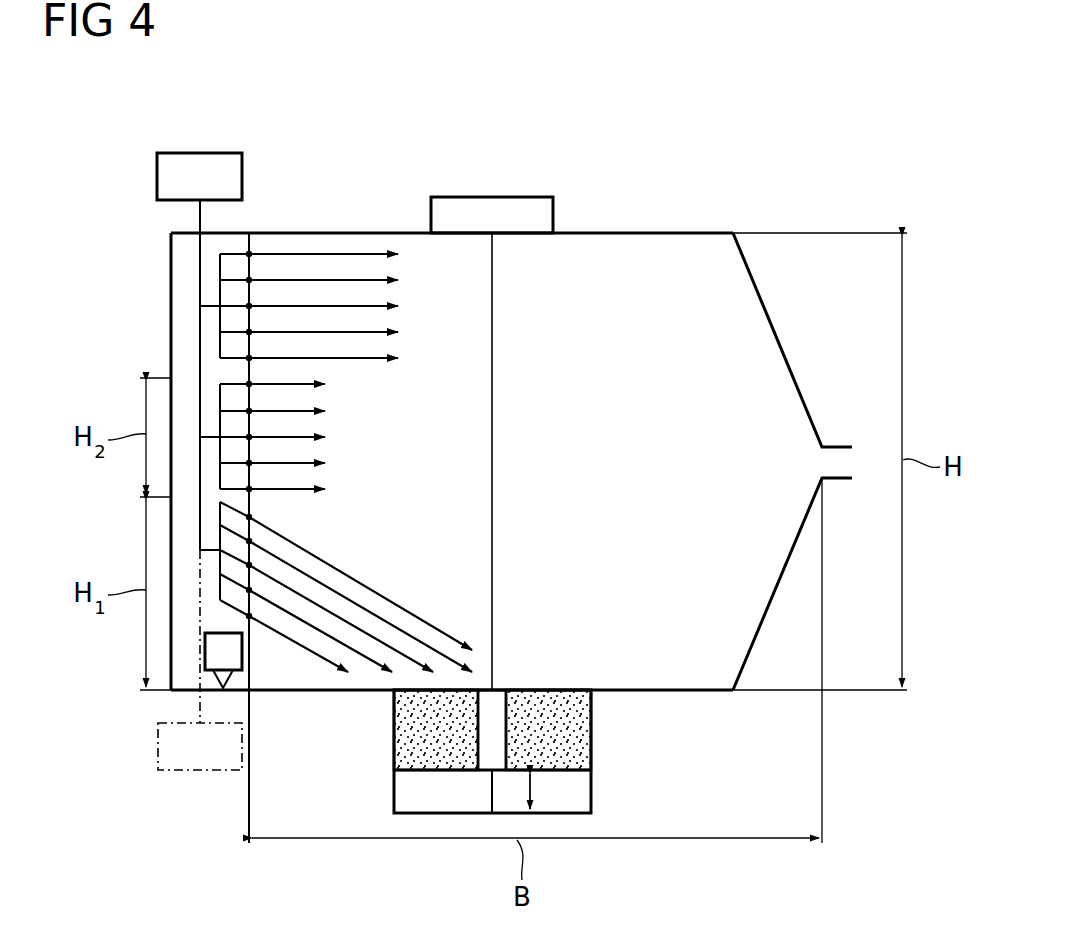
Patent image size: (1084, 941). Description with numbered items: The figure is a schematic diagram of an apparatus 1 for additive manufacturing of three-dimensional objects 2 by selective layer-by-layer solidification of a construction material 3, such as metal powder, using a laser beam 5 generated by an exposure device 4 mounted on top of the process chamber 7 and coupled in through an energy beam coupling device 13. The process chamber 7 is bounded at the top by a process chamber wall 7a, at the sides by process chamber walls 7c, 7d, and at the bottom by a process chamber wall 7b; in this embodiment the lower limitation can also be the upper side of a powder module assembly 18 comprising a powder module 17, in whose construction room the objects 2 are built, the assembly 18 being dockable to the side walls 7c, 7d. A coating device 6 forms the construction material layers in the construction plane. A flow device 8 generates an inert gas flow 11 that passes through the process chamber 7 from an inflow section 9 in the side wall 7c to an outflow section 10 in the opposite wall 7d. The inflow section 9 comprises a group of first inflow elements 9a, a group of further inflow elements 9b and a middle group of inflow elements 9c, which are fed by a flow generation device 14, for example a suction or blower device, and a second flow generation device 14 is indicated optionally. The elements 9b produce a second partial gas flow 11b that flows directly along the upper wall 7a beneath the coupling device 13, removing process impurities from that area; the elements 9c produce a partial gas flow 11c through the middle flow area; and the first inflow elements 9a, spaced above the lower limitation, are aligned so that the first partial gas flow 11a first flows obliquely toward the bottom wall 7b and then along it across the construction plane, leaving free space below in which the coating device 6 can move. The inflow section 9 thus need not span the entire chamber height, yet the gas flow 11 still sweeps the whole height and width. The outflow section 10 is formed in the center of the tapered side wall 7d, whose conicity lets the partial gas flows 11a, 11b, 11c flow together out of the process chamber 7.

The apparatus 1 is at (828, 172).
The three-dimensional object 2 is at (497, 700).
The construction material 3 is at (535, 721).
The exposure device 4 is at (511, 195).
The laser beam 5 is at (493, 436).
The coating device 6 is at (247, 649).
The process chamber 7 is at (494, 463).
The process chamber wall 7a is at (691, 232).
The process chamber wall 7b is at (705, 693).
The process chamber wall 7c is at (247, 373).
The process chamber wall 7d is at (790, 380).
The flow device 8 is at (165, 705).
The inflow section 9 is at (294, 507).
The first inflow elements 9a is at (257, 515).
The further inflow elements 9b is at (255, 275).
The inflow elements 9c is at (257, 377).
The outflow section 10 is at (805, 487).
The gas flow 11 is at (369, 455).
The first partial gas flow 11a is at (392, 590).
The second partial gas flow 11b is at (407, 288).
The partial gas flow 11c is at (352, 445).
The energy beam coupling device 13 is at (532, 243).
The flow generation device 14 is at (199, 152).
The powder module 17 is at (593, 745).
The powder module assembly 18 is at (593, 763).